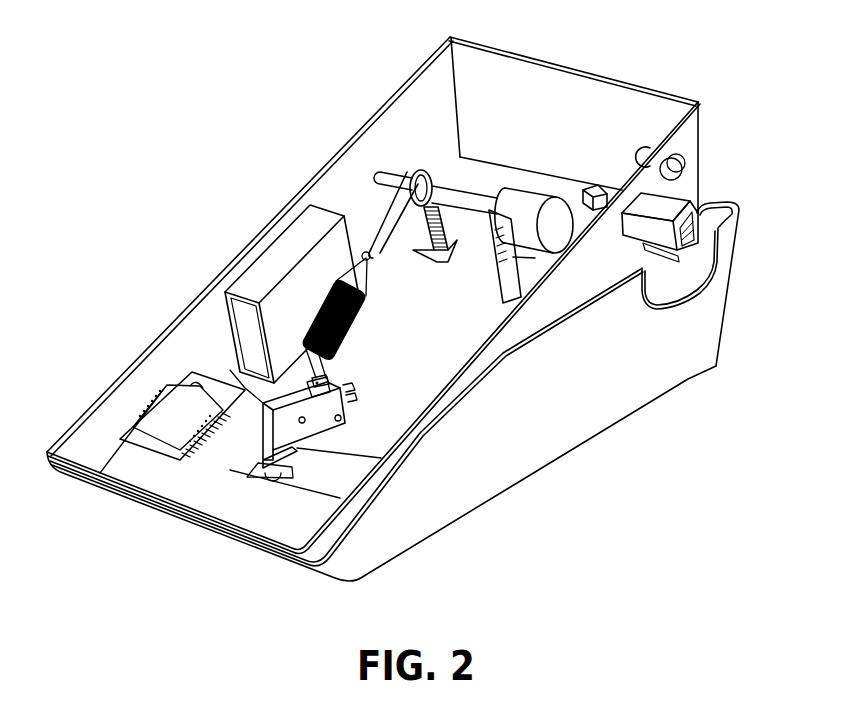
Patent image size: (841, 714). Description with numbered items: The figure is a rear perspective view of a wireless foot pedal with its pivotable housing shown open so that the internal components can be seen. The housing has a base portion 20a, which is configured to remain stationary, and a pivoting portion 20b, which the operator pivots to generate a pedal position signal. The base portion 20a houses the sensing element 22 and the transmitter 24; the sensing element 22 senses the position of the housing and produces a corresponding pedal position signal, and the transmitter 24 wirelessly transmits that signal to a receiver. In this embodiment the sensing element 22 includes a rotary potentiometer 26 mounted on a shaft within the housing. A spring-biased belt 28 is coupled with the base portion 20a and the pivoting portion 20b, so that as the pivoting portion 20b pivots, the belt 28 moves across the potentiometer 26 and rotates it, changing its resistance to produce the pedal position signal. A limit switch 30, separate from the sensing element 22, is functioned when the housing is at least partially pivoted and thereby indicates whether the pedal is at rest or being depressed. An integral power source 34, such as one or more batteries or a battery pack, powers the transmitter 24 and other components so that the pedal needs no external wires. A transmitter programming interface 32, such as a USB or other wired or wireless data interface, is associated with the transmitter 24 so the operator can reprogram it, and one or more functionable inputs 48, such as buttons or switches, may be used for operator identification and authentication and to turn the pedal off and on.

The base portion 20a is at (602, 110).
The pivoting portion 20b is at (538, 455).
The sensing element 22 is at (560, 231).
The transmitter 24 is at (163, 390).
The rotary potentiometer 26 is at (530, 193).
The spring-biased belt 28 is at (407, 165).
The limit switch 30 is at (280, 403).
The transmitter programming interface 32 is at (673, 203).
The integral power source 34 is at (290, 240).
The functionable inputs 48 is at (676, 155).